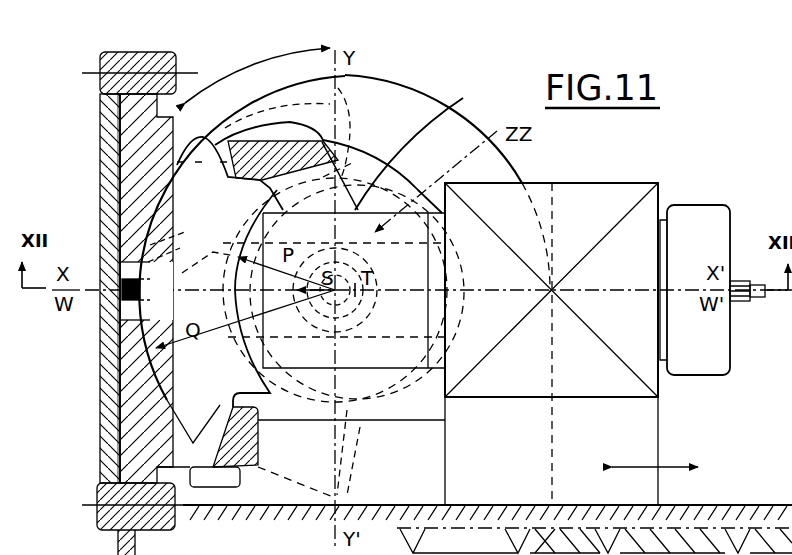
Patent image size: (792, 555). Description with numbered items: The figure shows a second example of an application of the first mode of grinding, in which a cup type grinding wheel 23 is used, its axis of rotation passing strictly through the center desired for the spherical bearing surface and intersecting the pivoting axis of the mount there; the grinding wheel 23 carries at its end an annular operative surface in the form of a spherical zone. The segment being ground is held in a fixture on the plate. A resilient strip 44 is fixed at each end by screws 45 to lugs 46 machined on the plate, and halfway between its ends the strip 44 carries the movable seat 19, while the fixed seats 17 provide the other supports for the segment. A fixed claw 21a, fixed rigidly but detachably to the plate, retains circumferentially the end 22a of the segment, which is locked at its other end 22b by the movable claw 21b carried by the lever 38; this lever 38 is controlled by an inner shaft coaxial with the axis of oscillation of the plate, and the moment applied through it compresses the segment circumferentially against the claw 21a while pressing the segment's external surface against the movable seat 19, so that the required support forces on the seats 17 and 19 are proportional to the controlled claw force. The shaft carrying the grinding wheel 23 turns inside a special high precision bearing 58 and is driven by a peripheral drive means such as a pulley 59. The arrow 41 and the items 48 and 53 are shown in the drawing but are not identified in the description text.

The fixed seats 17 is at (186, 204).
The movable seat 19 is at (191, 252).
The fixed claw 21a is at (246, 468).
The movable claw 21b is at (343, 128).
The circumferential end of the segment 22a is at (214, 488).
The other end of the segment 22b is at (262, 128).
The cup type grinding wheel 23 is at (398, 397).
The lever 38 is at (457, 109).
The rotation arrow 41 is at (257, 78).
The resilient strip 44 is at (100, 394).
The screws 45 is at (100, 88).
The lugs 46 is at (127, 480).
The bearing body 48 is at (160, 183).
The locking pin 53 is at (127, 347).
The high precision bearing 58 is at (605, 183).
The pulley 59 is at (699, 205).